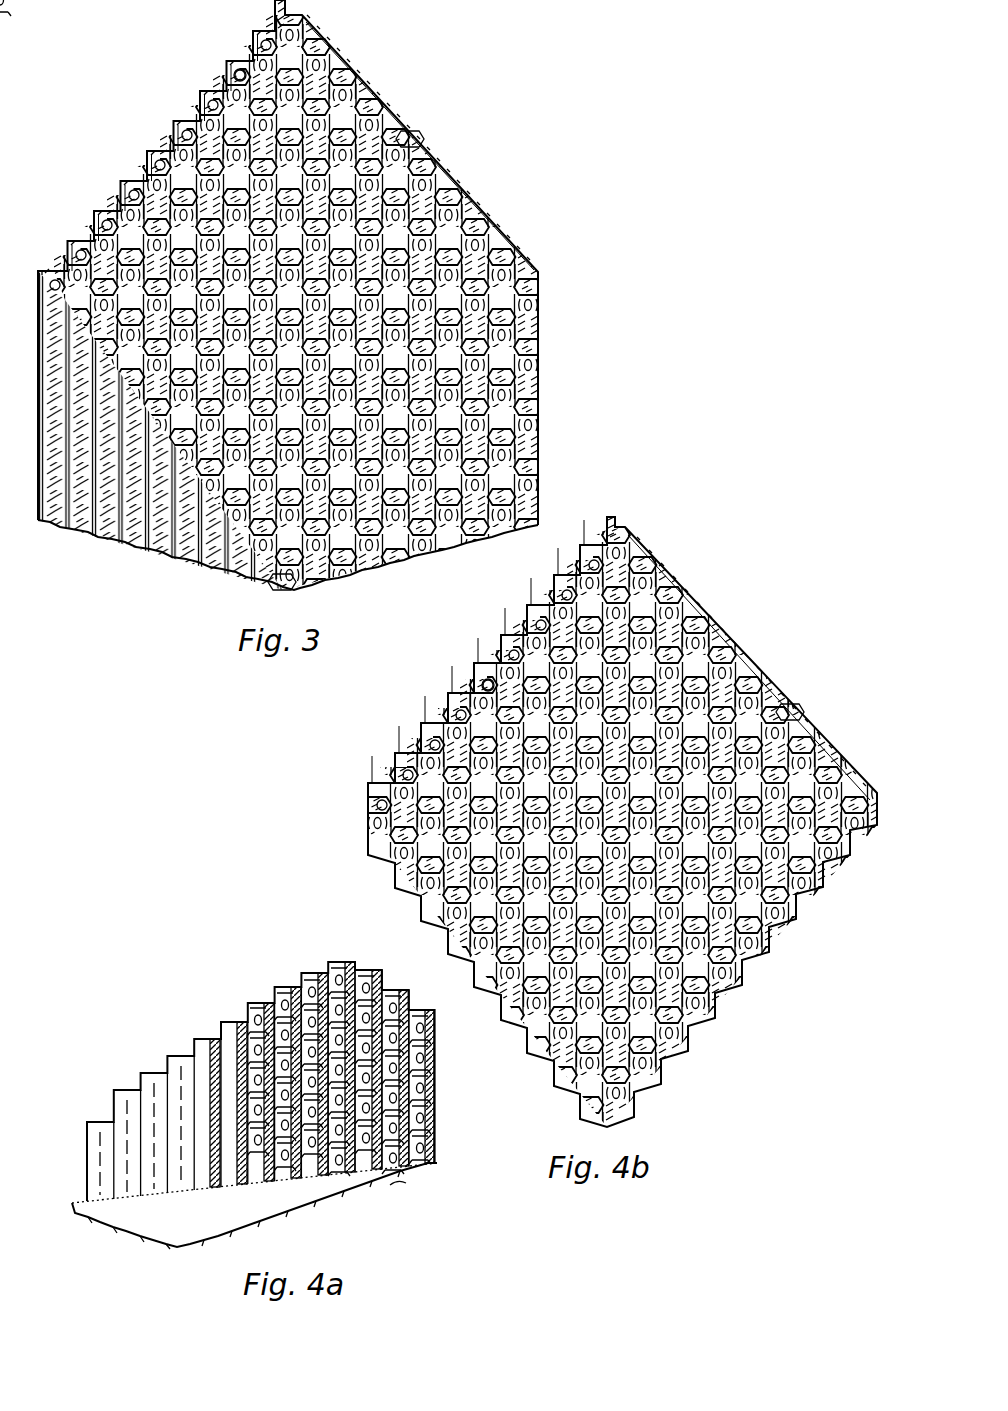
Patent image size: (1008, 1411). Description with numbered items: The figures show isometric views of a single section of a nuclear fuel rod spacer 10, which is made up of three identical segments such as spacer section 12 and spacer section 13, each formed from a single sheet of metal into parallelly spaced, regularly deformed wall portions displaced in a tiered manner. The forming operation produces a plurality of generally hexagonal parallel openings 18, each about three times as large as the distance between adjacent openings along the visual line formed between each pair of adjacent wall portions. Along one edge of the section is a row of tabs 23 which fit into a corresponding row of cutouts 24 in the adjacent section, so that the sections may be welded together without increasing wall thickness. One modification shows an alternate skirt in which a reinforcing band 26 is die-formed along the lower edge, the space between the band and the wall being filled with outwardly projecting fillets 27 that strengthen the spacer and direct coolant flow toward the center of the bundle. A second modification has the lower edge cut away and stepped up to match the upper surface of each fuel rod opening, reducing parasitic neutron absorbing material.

In FIG. 3, the spacer 10 is at (450, 148).
In FIG. 4A, the spacer section 12 is at (430, 1073).
In FIG. 3, the spacer section 13 is at (540, 364).
In FIG. 4B, the spacer section 13 is at (878, 842).
In FIG. 3, the hexagonal parallel openings 18 is at (322, 48).
In FIG. 3, the tabs 23 is at (245, 74).
In FIG. 4B, the tabs 23 is at (495, 676).
In FIG. 3, the cutouts 24 is at (410, 135).
In FIG. 4B, the cutouts 24 is at (792, 708).
In FIG. 4A, the reinforcing band 26 is at (394, 1193).
In FIG. 4A, the fillets 27 is at (401, 1175).